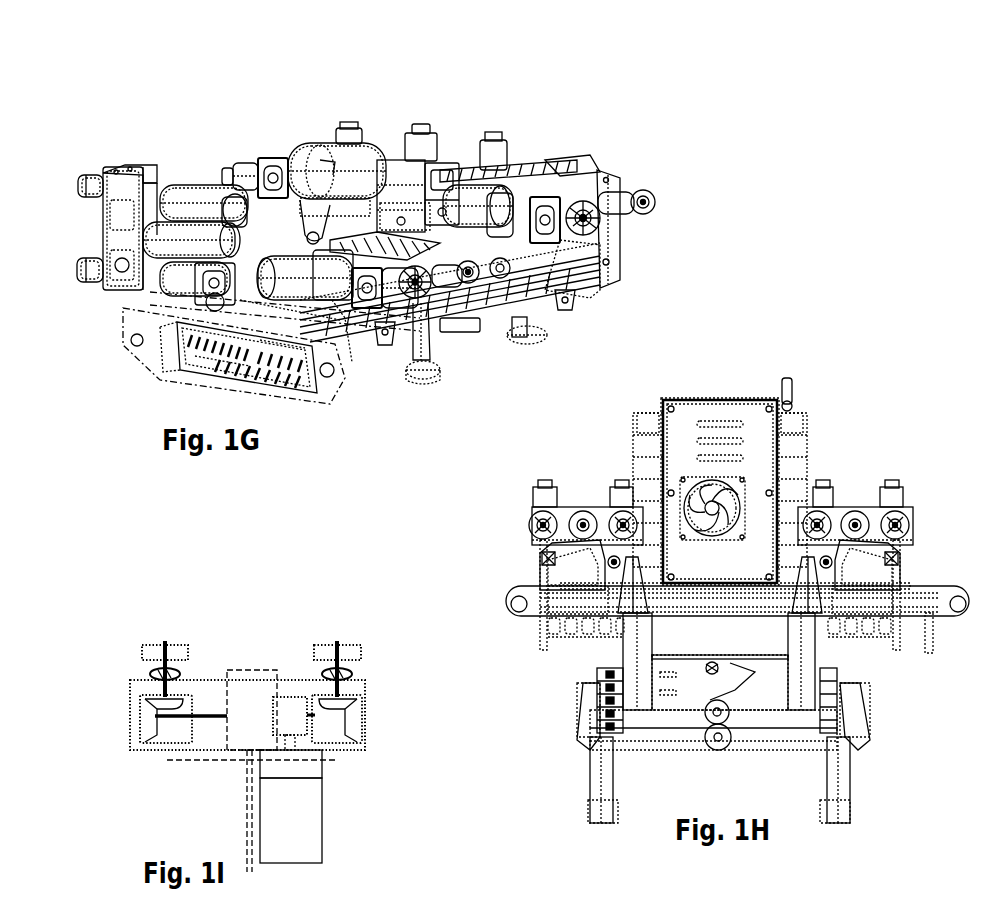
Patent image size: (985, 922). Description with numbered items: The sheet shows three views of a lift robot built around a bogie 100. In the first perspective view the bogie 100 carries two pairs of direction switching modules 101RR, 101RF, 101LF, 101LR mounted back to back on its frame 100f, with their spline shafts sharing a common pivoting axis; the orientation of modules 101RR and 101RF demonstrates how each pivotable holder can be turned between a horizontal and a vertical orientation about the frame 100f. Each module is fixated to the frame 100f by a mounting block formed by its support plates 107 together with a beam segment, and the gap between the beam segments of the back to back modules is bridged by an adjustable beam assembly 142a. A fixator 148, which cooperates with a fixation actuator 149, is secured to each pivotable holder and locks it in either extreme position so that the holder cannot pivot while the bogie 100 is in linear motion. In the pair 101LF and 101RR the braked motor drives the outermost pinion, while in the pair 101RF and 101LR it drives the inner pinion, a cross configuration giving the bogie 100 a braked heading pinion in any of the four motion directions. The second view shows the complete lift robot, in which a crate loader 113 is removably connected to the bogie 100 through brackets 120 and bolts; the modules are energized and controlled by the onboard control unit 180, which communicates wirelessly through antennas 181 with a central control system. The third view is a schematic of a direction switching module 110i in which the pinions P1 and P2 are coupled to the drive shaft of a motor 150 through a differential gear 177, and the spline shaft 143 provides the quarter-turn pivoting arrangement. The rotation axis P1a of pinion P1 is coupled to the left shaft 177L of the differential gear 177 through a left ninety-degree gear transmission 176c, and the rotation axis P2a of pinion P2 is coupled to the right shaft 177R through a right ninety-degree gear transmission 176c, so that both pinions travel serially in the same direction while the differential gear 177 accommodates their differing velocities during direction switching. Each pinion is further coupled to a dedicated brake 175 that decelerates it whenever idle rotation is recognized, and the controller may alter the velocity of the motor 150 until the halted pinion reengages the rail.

In FIG. 1G, the bogie 100 is at (445, 281).
In FIG. 1H, the bogie 100 is at (858, 437).
In FIG. 1G, the frame 100f is at (443, 327).
In FIG. 1H, the frame 100f is at (570, 603).
In FIG. 1G, the direction switching module 101RR is at (168, 155).
In FIG. 1G, the direction switching module 101RF is at (240, 108).
In FIG. 1G, the direction switching module 101LF is at (652, 171).
In FIG. 1G, the direction switching module 101LR is at (480, 342).
In FIG. 1G, the support plates 107 is at (386, 327).
In FIG. 1H, the support plates 107 is at (585, 586).
In FIG. 1I, the direction switching module 110i is at (310, 703).
In FIG. 1H, the crate loader 113 is at (550, 758).
In FIG. 1G, the brackets 120 is at (432, 383).
In FIG. 1G, the adjustable beam assembly 142a is at (437, 173).
In FIG. 1I, the spline shaft 143 is at (250, 670).
In FIG. 1G, the fixator 148 is at (327, 162).
In FIG. 1H, the fixator 148 is at (542, 558).
In FIG. 1I, the fixator 148 is at (188, 758).
In FIG. 1G, the fixation actuator 149 is at (415, 213).
In FIG. 1I, the motor 150 is at (317, 853).
In FIG. 1I, the brake 175 is at (150, 675).
In FIG. 1I, the 90 degrees gear transmission 176c is at (138, 722).
In FIG. 1I, the differential gear 177 is at (293, 703).
In FIG. 1I, the left shaft 177L is at (203, 717).
In FIG. 1I, the right shaft 177R is at (318, 752).
In FIG. 1H, the onboard control unit 180 is at (734, 572).
In FIG. 1H, the antennas 181 is at (790, 403).
In FIG. 1I, the pinion P1 is at (150, 653).
In FIG. 1I, the rotation axis P1a is at (167, 642).
In FIG. 1I, the pinion P2 is at (323, 653).
In FIG. 1I, the rotation axis P2a is at (338, 642).